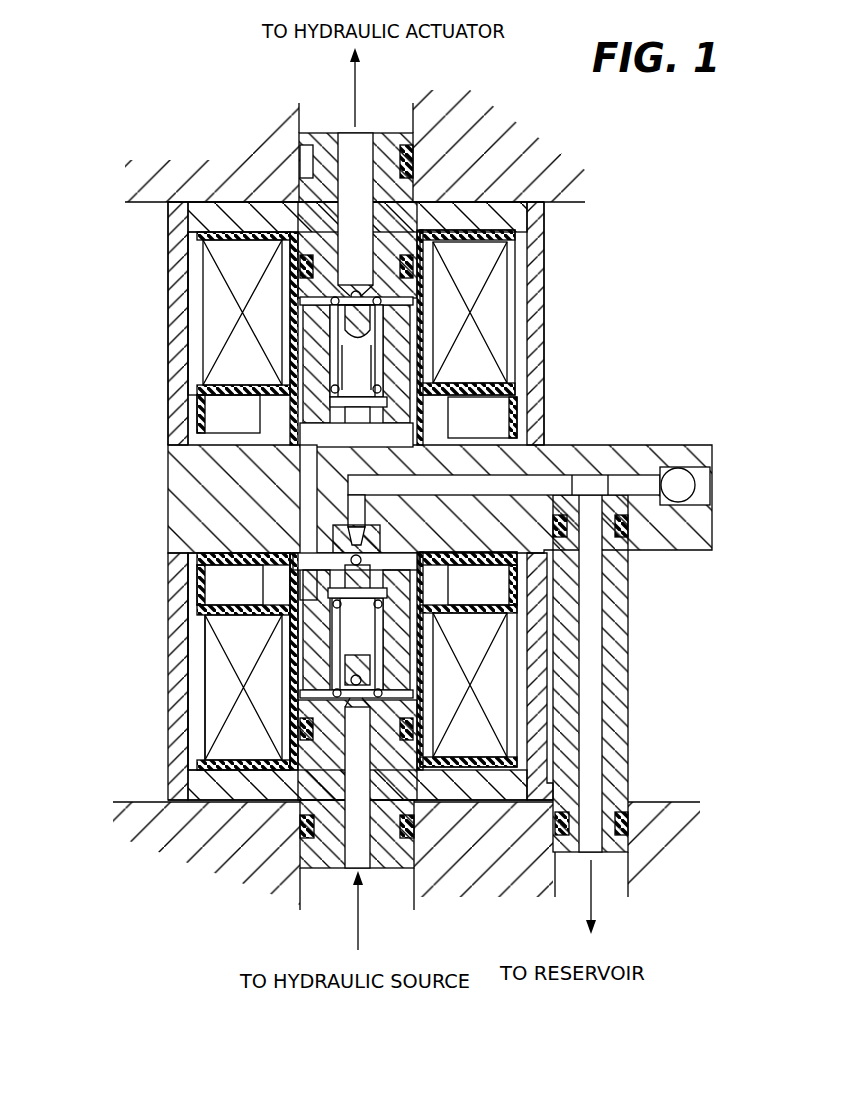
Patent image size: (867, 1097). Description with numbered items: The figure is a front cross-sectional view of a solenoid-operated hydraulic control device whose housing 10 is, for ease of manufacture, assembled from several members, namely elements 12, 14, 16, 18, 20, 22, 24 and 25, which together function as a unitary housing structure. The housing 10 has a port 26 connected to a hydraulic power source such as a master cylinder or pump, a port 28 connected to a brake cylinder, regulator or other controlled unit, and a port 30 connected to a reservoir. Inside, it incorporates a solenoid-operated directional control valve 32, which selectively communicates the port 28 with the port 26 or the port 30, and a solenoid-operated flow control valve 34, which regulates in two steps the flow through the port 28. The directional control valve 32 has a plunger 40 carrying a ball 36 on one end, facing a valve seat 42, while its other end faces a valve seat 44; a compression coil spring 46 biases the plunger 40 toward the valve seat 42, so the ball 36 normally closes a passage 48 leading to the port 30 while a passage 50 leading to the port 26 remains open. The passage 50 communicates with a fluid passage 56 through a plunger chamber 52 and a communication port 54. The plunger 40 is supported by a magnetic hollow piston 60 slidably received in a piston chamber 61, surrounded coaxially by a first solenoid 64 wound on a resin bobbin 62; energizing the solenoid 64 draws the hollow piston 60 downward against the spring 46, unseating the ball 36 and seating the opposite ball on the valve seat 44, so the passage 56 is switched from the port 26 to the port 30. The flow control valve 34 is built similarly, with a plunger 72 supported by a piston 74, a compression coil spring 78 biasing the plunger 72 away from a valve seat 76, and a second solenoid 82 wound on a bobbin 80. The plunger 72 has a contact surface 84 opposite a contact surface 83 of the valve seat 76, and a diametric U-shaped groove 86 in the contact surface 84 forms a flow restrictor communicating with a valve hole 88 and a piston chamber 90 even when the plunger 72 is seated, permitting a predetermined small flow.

The housing 10 is at (583, 215).
The housing member 12 is at (140, 206).
The housing member 14 is at (172, 213).
The housing member 16 is at (170, 276).
The housing member 18 is at (185, 456).
The housing member 20 is at (178, 600).
The housing member 22 is at (172, 796).
The housing member 24 is at (654, 807).
The housing member 25 is at (611, 714).
The port 26 is at (322, 890).
The port 28 is at (328, 118).
The port 30 is at (608, 880).
The solenoid-operated directional control valve 32 is at (160, 664).
The solenoid-operated flow control valve 34 is at (160, 351).
The ball 36 is at (382, 556).
The plunger 40 is at (365, 637).
The valve seat 42 is at (350, 558).
The valve seat 44 is at (426, 684).
The compression coil spring 46 is at (420, 628).
The passage 48 is at (556, 478).
The passage 50 is at (362, 860).
The plunger chamber 52 is at (295, 648).
The communication port 54 is at (307, 618).
The fluid passage 56 is at (305, 497).
The hollow piston 60 is at (410, 648).
The piston chamber 61 is at (300, 684).
The bobbin 62 is at (200, 567).
The first solenoid 64 is at (208, 724).
The plunger 72 is at (340, 336).
The piston 74 is at (320, 372).
The valve seat 76 is at (428, 306).
The compression coil spring 78 is at (395, 375).
The bobbin 80 is at (548, 406).
The second solenoid 82 is at (498, 275).
The contact surface 83 is at (410, 330).
The contact surface 84 is at (352, 290).
The U-shaped groove 86 is at (415, 345).
The valve hole 88 is at (420, 282).
The piston chamber 90 is at (300, 300).